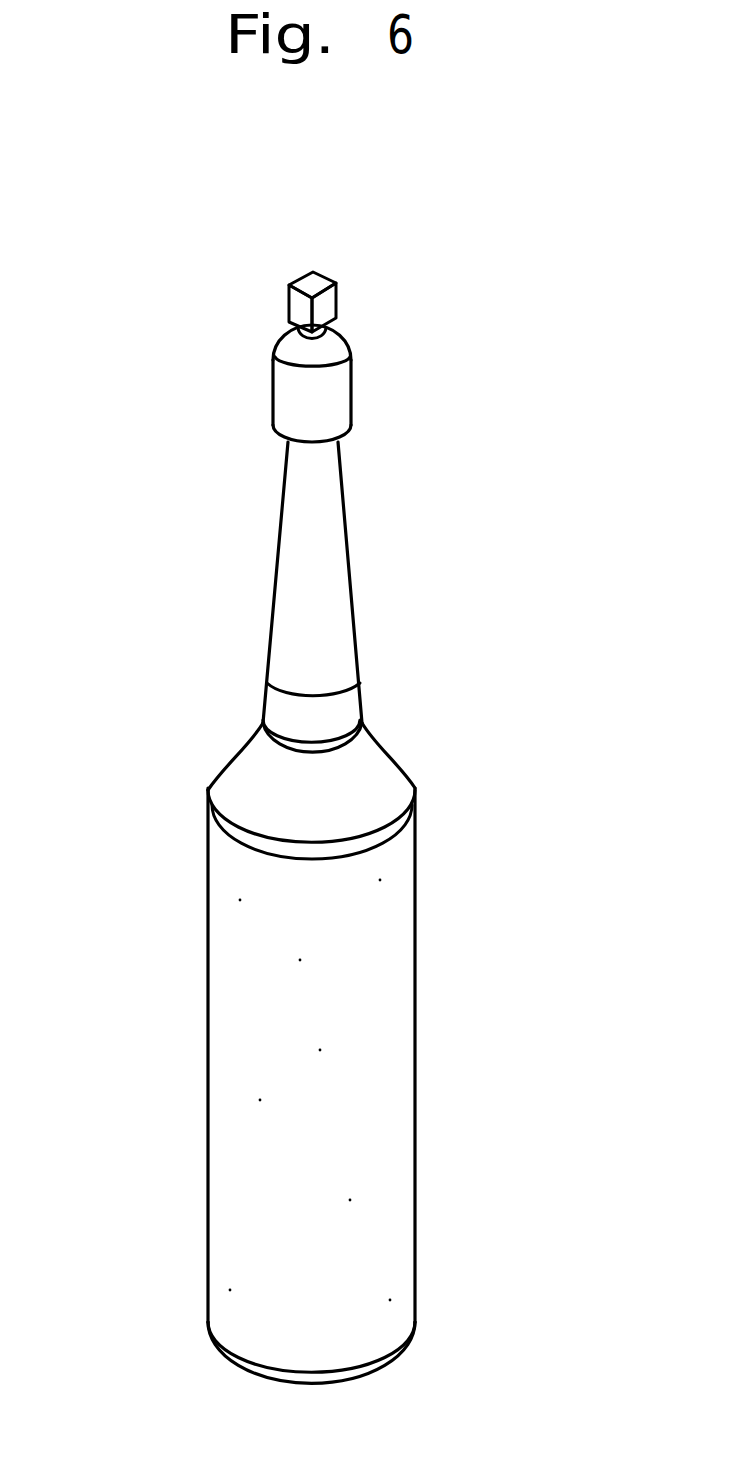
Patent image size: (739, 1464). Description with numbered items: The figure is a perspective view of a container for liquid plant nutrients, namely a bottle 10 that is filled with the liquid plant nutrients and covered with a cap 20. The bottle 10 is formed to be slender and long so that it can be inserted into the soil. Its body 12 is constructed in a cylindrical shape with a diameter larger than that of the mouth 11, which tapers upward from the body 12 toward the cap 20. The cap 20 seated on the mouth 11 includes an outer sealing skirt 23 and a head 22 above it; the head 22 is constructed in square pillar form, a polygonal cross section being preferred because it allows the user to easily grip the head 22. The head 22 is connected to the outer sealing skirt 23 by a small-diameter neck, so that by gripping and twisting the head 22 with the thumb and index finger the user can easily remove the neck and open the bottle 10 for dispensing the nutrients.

The bottle 10 is at (470, 988).
The mouth 11 is at (297, 583).
The body 12 is at (233, 1103).
The cap 20 is at (315, 327).
The head 22 is at (297, 305).
The outer sealing skirt 23 is at (287, 392).